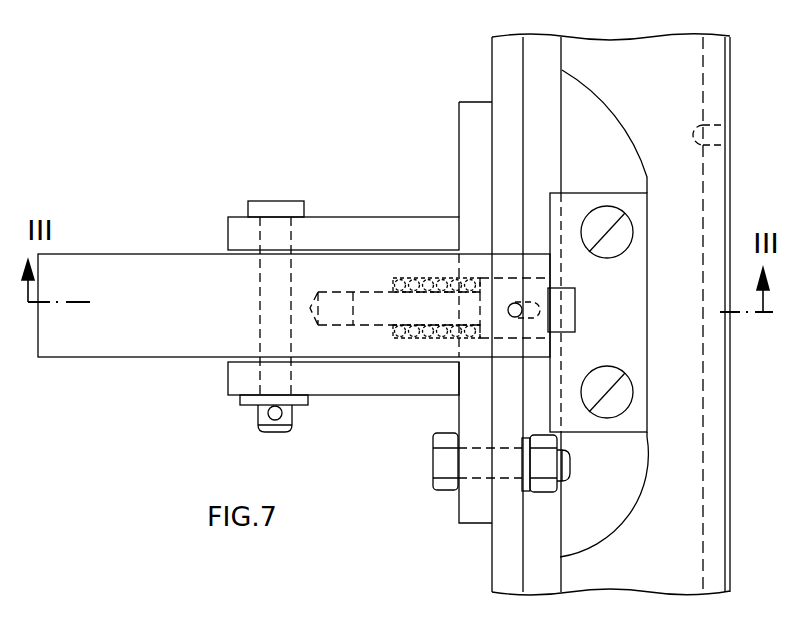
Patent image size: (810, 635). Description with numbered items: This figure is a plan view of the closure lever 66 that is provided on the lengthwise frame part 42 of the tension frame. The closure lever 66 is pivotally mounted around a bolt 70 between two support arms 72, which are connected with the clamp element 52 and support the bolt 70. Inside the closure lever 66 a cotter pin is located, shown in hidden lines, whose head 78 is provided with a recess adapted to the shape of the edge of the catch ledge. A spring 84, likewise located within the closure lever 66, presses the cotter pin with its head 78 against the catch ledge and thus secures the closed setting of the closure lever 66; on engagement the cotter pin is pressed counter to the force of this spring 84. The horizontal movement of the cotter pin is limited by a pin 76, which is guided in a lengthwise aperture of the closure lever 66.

The lengthwise frame part 42 is at (712, 540).
The clamp element 52 is at (503, 571).
The closure lever 66 is at (142, 252).
The bolt 70 is at (283, 200).
The support arm 72 is at (356, 217).
The pin 76 is at (517, 303).
The head 78 is at (576, 311).
The spring 84 is at (418, 277).